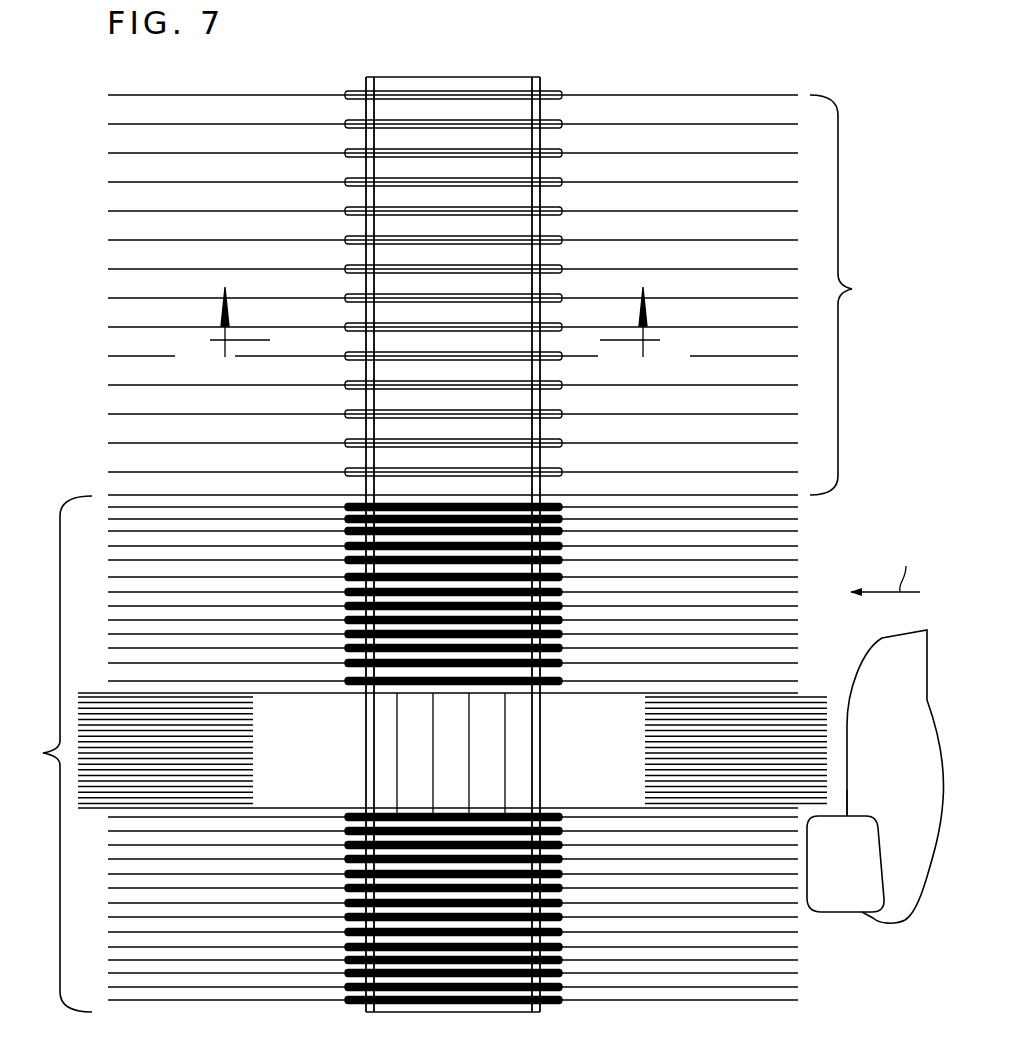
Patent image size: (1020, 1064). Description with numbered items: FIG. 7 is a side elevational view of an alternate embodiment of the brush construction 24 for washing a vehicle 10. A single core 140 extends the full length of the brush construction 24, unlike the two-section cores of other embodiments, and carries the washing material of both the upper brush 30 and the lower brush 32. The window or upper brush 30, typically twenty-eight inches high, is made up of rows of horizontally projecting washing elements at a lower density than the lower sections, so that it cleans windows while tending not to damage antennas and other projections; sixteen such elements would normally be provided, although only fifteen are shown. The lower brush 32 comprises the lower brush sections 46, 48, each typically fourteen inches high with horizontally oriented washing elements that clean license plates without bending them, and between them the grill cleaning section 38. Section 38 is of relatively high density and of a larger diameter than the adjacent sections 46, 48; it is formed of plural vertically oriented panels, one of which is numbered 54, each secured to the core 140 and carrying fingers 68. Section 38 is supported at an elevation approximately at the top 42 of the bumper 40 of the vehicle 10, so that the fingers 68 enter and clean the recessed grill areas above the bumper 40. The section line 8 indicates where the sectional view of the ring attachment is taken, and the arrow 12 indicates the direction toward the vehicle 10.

The section line 8- 8 is at (430, 329).
The vehicle 10 is at (866, 645).
The direction of insertion 12 is at (888, 566).
The brush construction 24 is at (475, 523).
The upper brush 30 is at (856, 290).
The lower brush 32 is at (40, 762).
The grill cleaning section 38 is at (833, 742).
The bumper 40 is at (868, 870).
The top of bumper 42 is at (838, 812).
The lower brush section 46 is at (805, 961).
The lower brush section 48 is at (805, 568).
The panel 54 is at (597, 742).
The fingers 68 is at (822, 697).
The core 140 is at (532, 100).